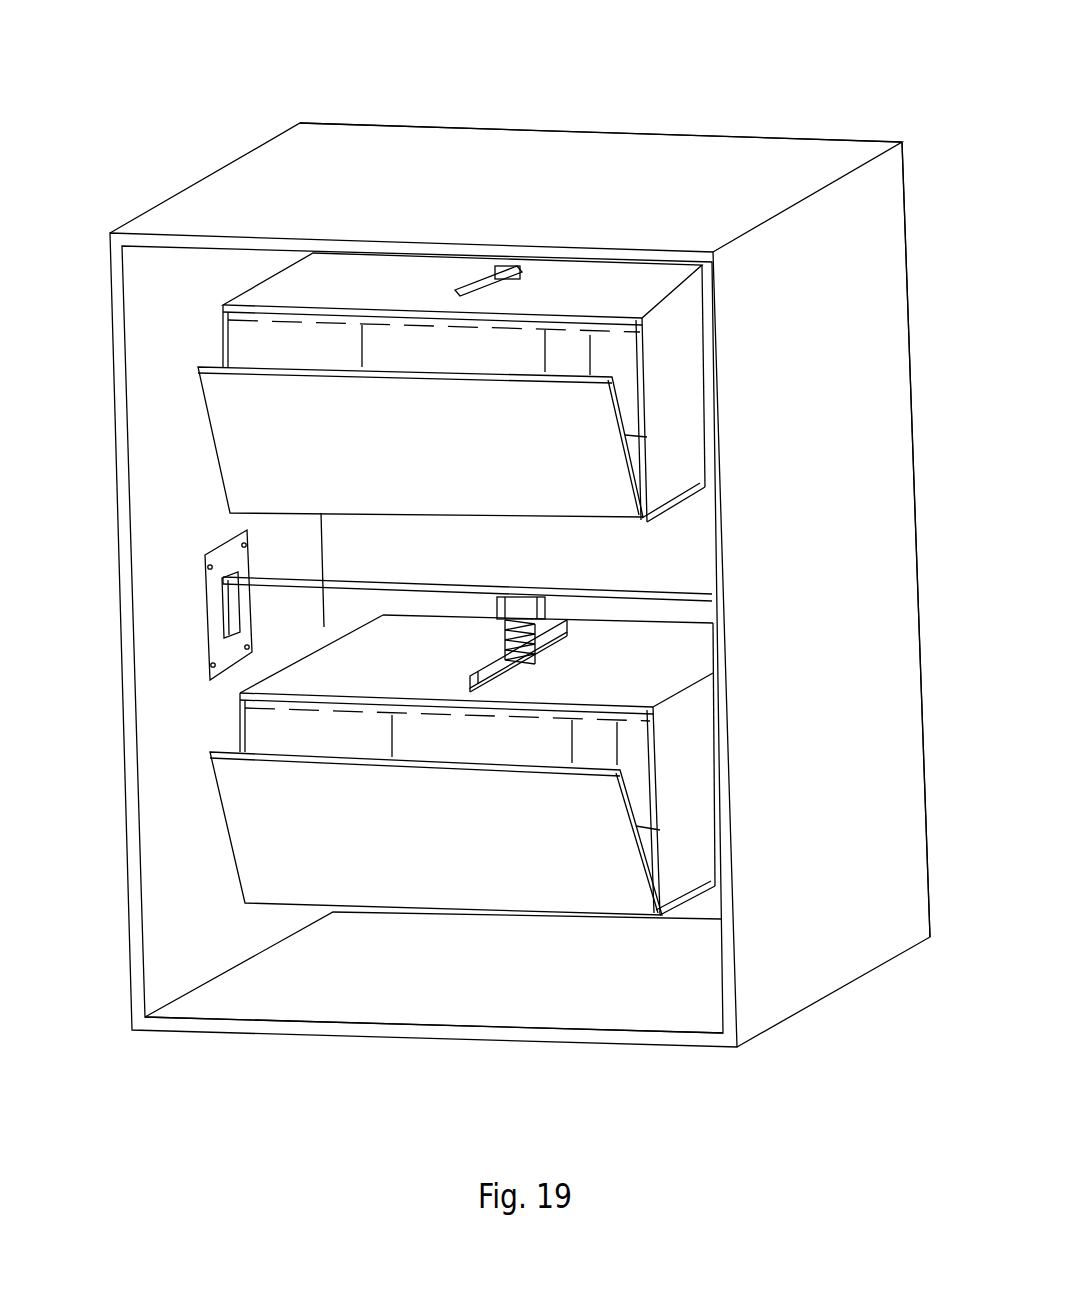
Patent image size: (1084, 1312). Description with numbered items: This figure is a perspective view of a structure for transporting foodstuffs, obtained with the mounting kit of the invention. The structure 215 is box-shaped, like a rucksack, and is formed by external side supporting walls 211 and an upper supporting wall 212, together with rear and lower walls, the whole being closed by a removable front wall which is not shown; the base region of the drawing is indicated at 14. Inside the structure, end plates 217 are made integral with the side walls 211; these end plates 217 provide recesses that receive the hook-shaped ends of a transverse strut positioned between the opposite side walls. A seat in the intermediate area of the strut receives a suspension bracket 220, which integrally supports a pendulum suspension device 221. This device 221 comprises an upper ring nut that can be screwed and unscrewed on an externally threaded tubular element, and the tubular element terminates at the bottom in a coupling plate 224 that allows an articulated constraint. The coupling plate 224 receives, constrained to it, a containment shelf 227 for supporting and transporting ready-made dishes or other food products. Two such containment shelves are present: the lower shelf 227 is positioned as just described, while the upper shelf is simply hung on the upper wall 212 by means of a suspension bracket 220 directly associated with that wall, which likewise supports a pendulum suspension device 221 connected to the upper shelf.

The base 14 is at (480, 992).
The external side supporting wall 211 is at (715, 567).
The upper supporting wall 212 is at (518, 160).
The box-shaped structure 215 is at (822, 137).
The end plate 217 is at (200, 607).
The suspension bracket 220 is at (515, 603).
The pendulum suspension device 221 is at (578, 645).
The coupling plate 224 is at (528, 662).
The containment shelf 227 is at (688, 400).